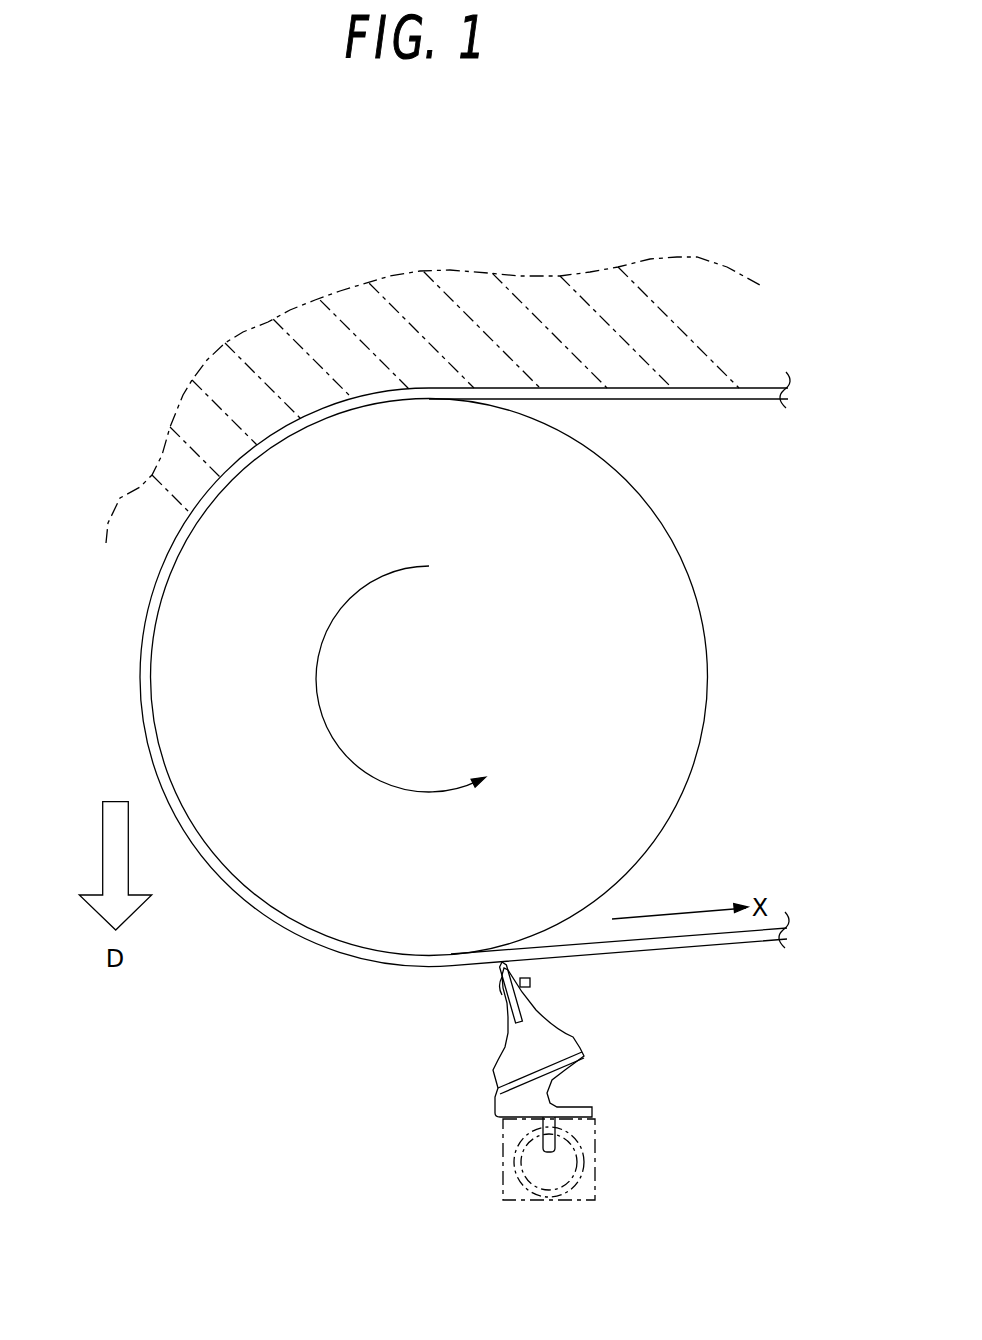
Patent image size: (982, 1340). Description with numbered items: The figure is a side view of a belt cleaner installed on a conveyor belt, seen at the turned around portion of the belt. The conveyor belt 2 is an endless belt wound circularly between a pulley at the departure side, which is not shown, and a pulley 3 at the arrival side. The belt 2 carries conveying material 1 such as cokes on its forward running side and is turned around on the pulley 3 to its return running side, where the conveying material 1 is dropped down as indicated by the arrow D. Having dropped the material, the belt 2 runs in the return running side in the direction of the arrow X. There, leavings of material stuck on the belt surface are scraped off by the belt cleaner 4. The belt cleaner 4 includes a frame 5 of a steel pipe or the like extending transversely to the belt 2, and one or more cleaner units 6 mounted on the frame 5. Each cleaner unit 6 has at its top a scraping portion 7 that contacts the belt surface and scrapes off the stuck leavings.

The conveying material 1 is at (457, 263).
The conveyor belt 2 is at (686, 948).
The pulley 3 is at (652, 510).
The belt cleaner 4 is at (516, 1081).
The frame 5 is at (585, 1163).
The cleaner unit 6 is at (586, 1047).
The scraping portion 7 is at (503, 966).